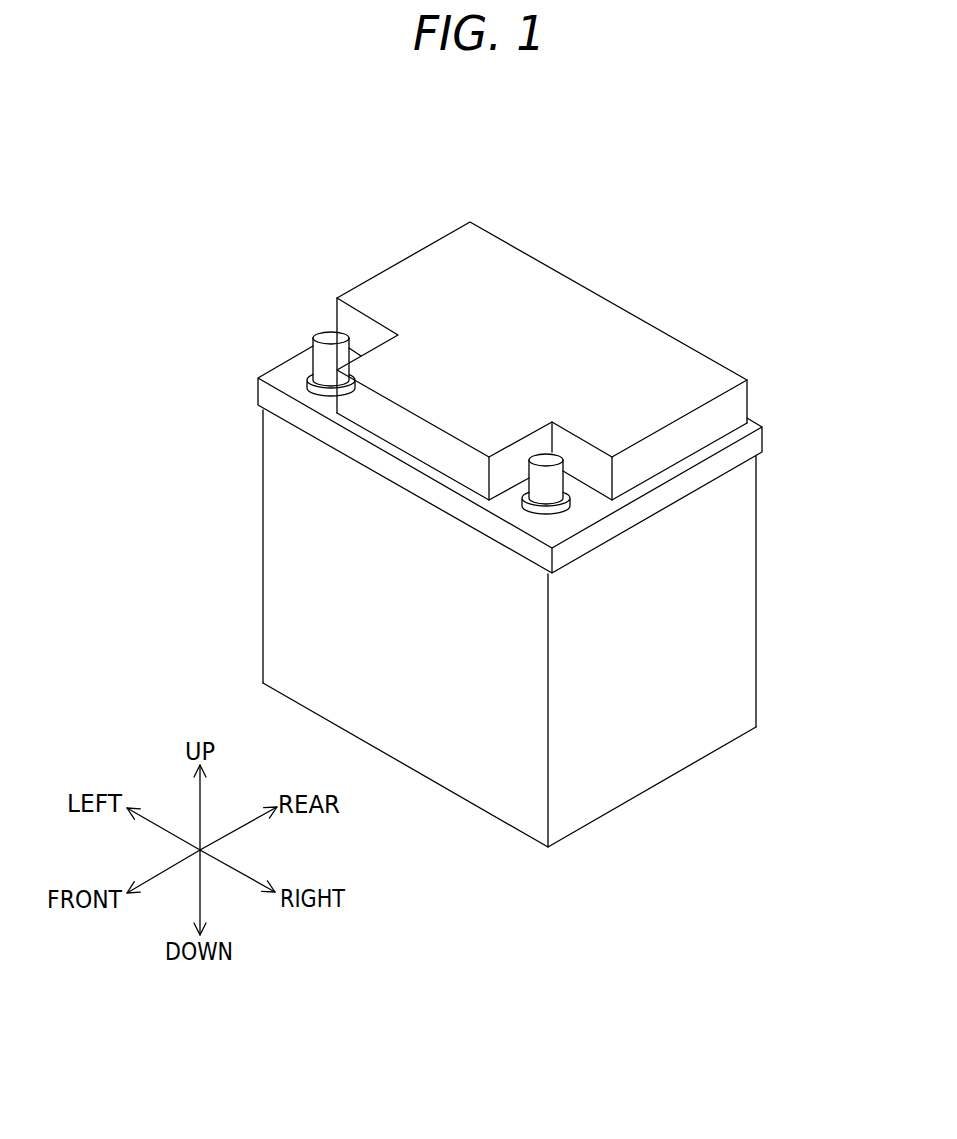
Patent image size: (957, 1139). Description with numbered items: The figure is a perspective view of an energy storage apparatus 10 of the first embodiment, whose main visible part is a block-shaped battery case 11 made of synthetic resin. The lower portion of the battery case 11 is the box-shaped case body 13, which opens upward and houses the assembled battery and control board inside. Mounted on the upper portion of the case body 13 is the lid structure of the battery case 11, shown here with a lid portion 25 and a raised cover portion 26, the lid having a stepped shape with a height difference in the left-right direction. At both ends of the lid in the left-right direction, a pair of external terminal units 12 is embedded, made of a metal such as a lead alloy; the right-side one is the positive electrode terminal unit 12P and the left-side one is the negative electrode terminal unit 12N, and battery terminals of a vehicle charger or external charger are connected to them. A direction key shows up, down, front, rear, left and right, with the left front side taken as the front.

The energy storage apparatus 10 is at (650, 185).
The battery case 11 is at (733, 584).
The external terminal units 12 is at (494, 363).
The negative electrode terminal unit 12N is at (329, 334).
The positive electrode terminal unit 12P is at (552, 458).
The case body 13 is at (662, 767).
The lid (upper case) 25 is at (287, 374).
The terminal cover 26 is at (522, 288).